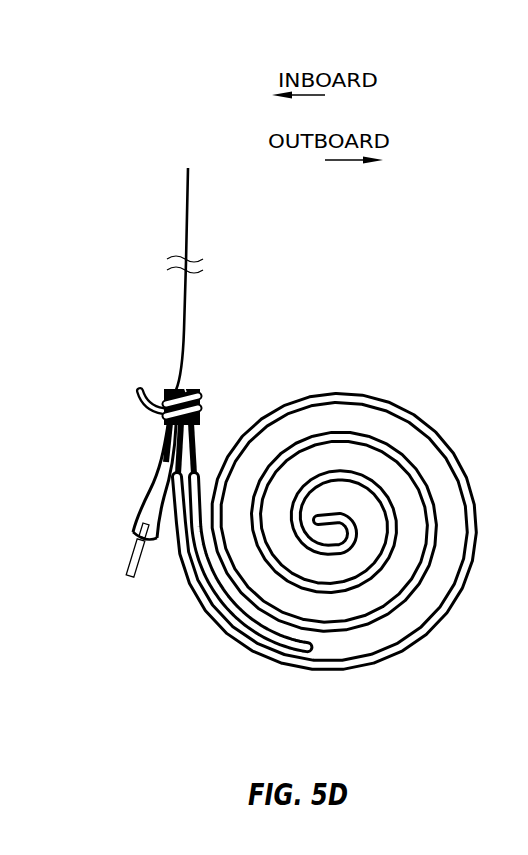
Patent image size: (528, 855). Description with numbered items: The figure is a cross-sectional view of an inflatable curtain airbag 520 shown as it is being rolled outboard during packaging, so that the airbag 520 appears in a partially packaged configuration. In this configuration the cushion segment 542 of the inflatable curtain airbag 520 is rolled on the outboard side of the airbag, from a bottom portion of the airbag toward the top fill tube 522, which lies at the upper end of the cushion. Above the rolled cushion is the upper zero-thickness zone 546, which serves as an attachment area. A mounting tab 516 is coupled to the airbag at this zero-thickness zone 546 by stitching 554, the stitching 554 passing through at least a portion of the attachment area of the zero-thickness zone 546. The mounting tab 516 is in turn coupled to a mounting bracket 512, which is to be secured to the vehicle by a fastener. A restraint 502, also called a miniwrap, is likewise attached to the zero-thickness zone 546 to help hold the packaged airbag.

The restraint 502 is at (190, 213).
The mounting bracket 512 is at (122, 569).
The mounting tab 516 is at (160, 466).
The inflatable curtain airbag 520 is at (390, 307).
The top fill tube 522 is at (243, 618).
The cushion segment 542 is at (347, 681).
The zero-thickness zone 546 is at (207, 393).
The stitching 554 is at (140, 386).